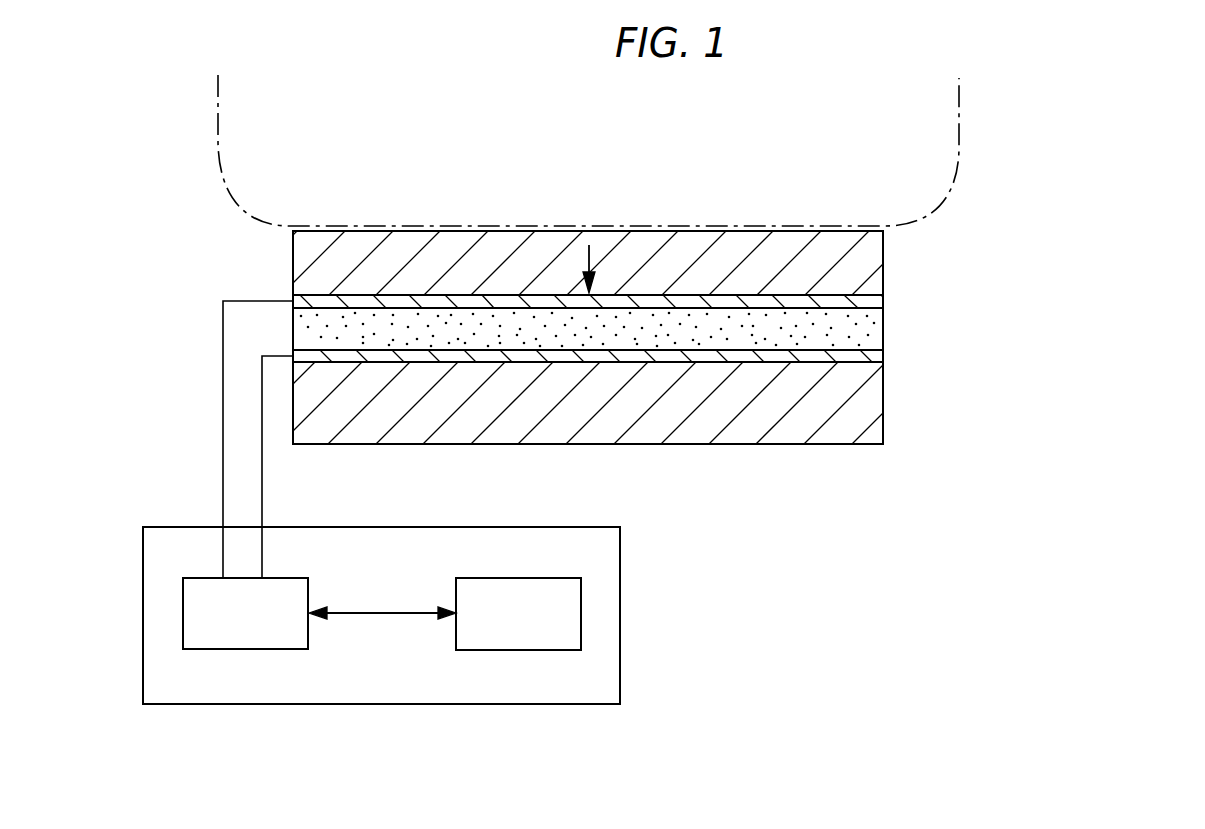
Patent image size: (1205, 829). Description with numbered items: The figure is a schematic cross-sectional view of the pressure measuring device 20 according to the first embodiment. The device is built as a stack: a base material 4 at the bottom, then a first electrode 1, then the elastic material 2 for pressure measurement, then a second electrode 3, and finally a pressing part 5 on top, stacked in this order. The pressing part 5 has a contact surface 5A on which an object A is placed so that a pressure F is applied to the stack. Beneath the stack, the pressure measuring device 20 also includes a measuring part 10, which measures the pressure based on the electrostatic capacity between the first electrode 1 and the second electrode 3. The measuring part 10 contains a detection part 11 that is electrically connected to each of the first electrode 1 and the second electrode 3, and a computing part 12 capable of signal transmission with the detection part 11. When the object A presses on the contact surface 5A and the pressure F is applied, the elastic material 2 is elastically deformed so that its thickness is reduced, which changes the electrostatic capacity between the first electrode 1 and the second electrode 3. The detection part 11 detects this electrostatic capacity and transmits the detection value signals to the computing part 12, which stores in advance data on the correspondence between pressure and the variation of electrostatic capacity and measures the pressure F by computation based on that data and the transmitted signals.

The first electrode 1 is at (862, 356).
The elastic material for pressure measurement 2 is at (862, 335).
The second electrode 3 is at (862, 302).
The base material 4 is at (860, 410).
The pressing part 5 is at (867, 267).
The contact surface 5A is at (827, 231).
The measuring part 10 is at (381, 665).
The detection part 11 is at (246, 649).
The computing part 12 is at (516, 650).
The pressure measuring device 20 is at (743, 398).
The object A is at (960, 130).
The pressure F is at (597, 264).